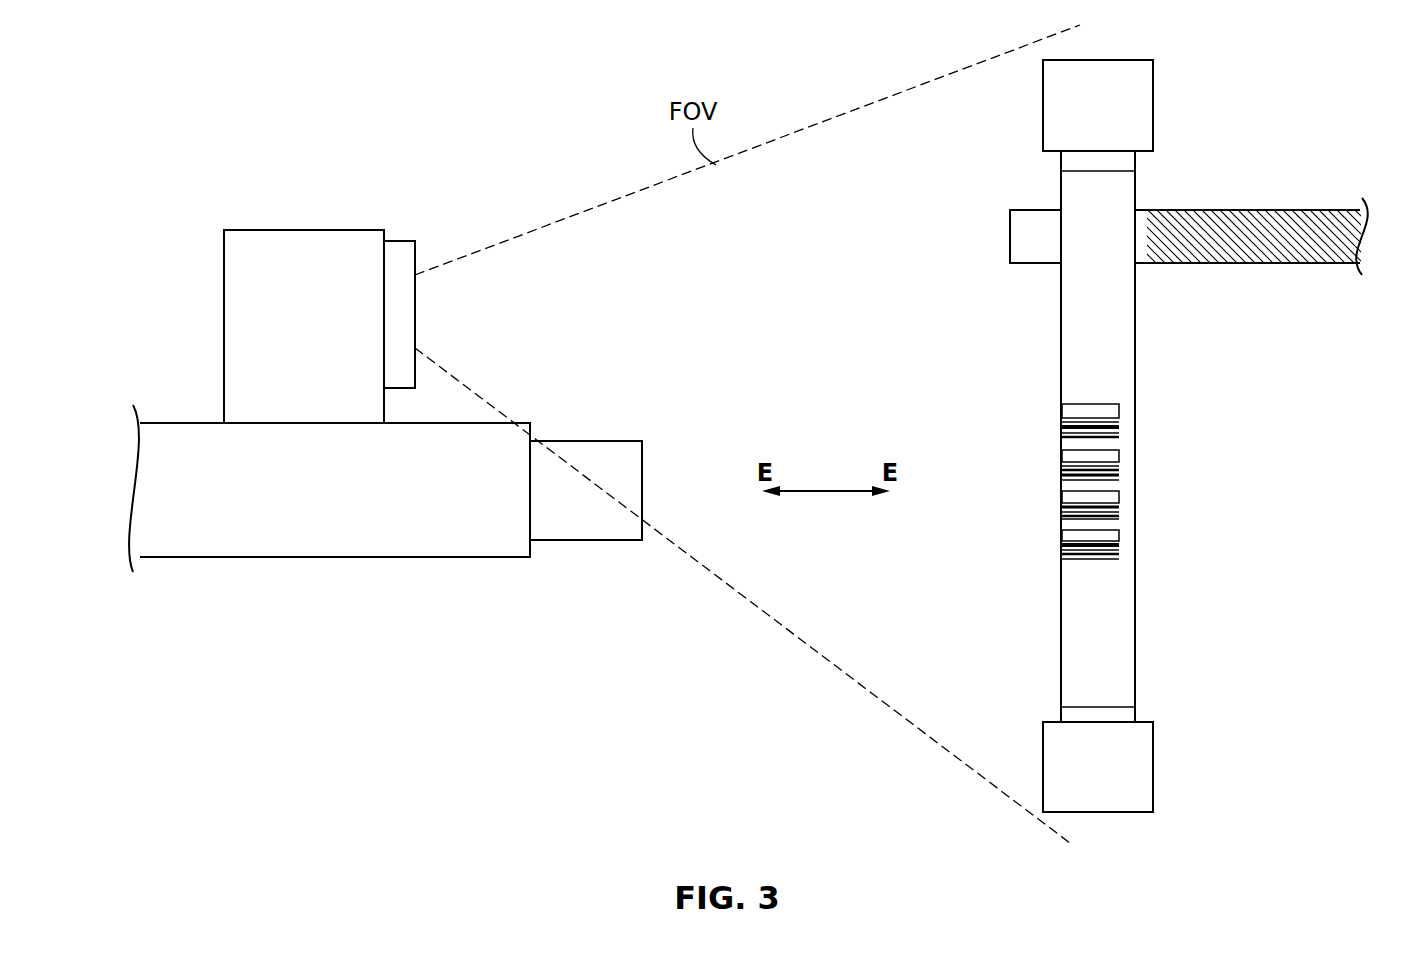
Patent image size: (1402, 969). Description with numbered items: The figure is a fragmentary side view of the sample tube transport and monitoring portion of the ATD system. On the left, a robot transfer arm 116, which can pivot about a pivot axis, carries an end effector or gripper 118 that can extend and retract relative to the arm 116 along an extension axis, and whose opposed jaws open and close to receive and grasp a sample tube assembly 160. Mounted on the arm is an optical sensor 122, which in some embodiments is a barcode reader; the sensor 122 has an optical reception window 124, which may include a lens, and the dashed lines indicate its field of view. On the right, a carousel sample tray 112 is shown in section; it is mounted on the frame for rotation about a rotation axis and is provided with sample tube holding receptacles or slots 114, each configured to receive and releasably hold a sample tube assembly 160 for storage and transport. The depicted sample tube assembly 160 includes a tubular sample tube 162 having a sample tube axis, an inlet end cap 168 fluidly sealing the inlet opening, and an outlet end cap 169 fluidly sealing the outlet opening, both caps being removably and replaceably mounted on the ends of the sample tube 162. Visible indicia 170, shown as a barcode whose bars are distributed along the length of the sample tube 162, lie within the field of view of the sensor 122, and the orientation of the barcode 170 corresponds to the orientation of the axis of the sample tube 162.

The carousel sample tray 112 is at (1267, 218).
The sample tube holding receptacles or slots 114 is at (1025, 243).
The robot transfer arm 116 is at (168, 548).
The end effector or gripper 118 is at (565, 527).
The optical sensor 122 is at (297, 237).
The optical reception window 124 is at (417, 318).
The sample tube assembly 160 is at (1134, 432).
The sample tube 162 is at (1122, 615).
The inlet end cap 168 is at (1135, 760).
The outlet end cap 169 is at (1140, 80).
The visible indicia 170 is at (1052, 500).